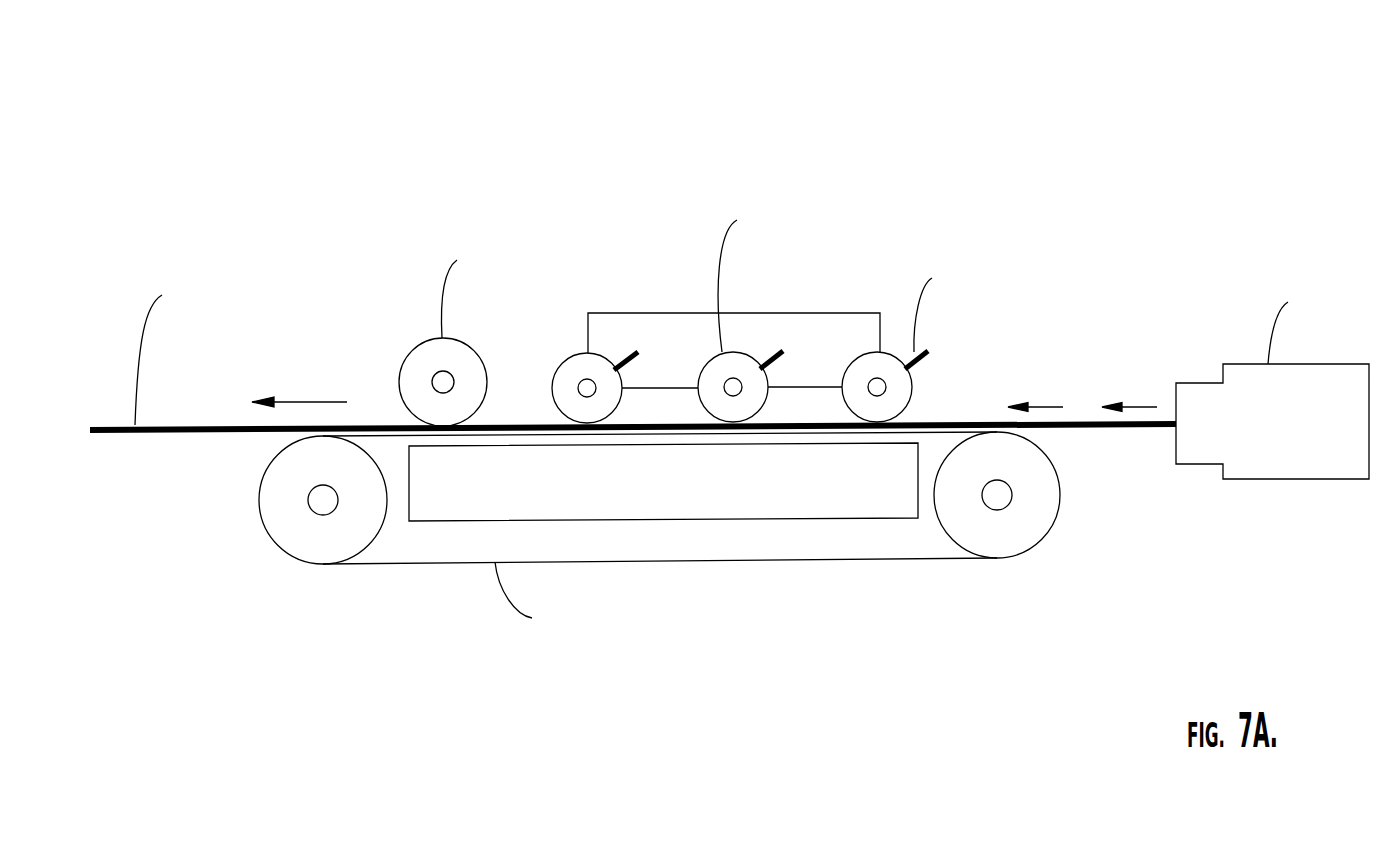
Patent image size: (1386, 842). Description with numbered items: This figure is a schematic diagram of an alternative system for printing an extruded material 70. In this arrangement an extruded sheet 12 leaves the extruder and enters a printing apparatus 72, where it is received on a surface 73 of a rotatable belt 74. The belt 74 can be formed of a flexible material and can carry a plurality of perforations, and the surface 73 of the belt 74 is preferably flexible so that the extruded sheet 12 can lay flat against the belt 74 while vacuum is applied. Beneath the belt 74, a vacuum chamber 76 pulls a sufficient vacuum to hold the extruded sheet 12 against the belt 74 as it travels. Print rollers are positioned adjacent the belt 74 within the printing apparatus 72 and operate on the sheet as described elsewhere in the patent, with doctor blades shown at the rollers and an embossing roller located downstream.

The alternative system for printing an extruded material 70 is at (520, 102).
The extruded sheet 12 is at (1163, 419).
The printing apparatus 72 is at (895, 228).
The surface 73 is at (934, 423).
The rotatable belt 74 is at (1057, 473).
The vacuum chamber 76 is at (848, 512).